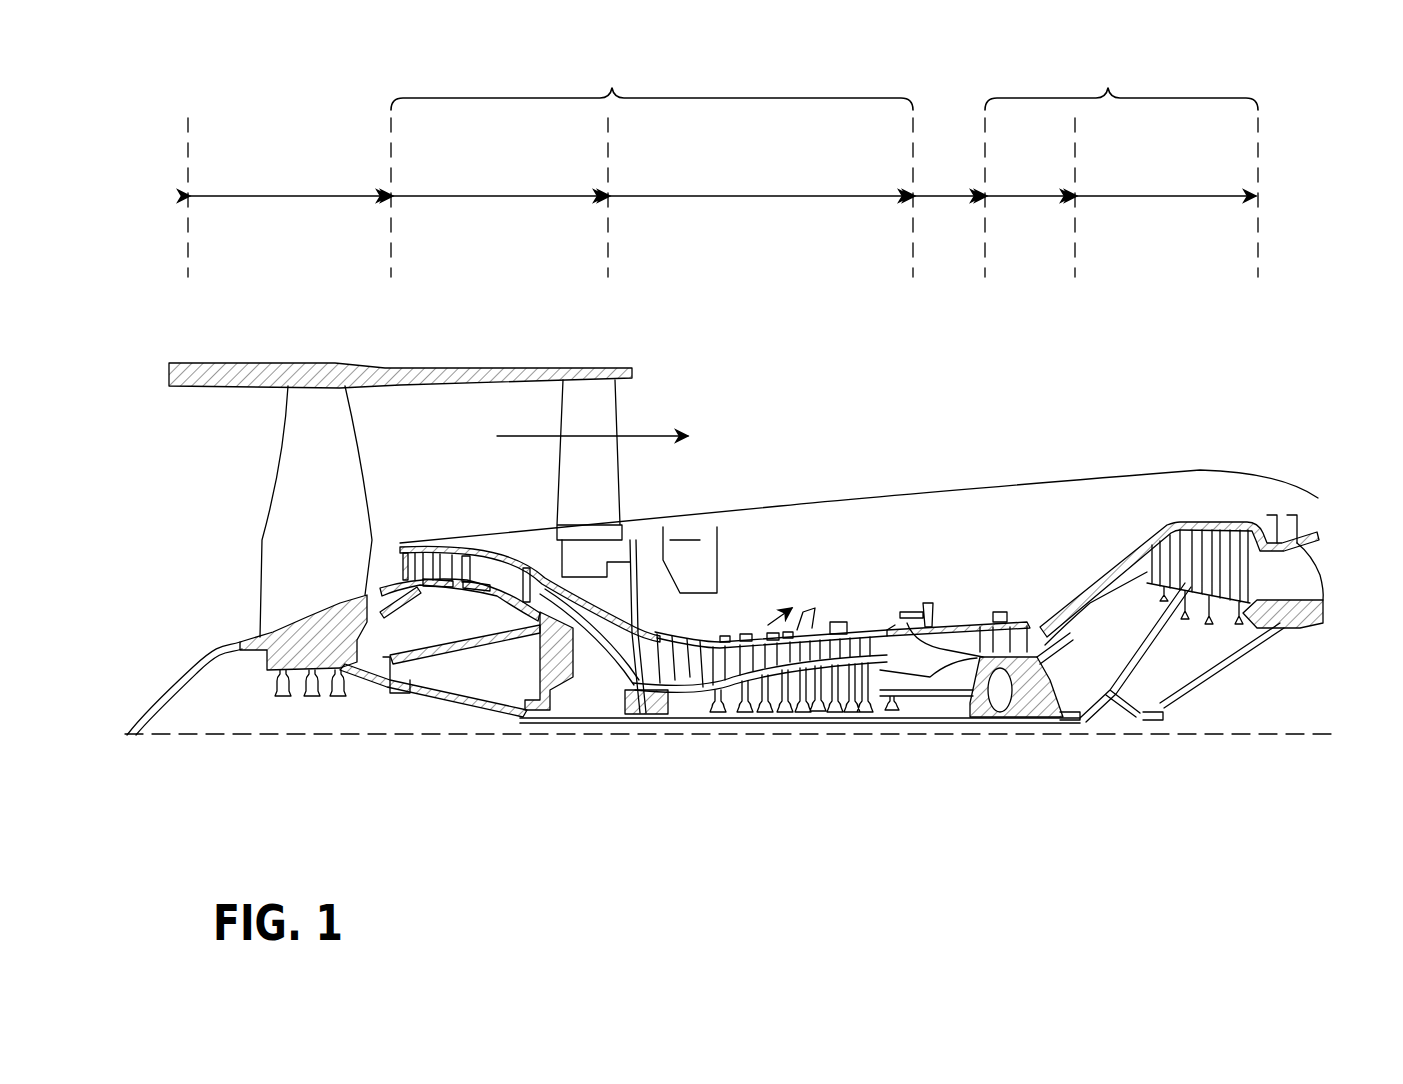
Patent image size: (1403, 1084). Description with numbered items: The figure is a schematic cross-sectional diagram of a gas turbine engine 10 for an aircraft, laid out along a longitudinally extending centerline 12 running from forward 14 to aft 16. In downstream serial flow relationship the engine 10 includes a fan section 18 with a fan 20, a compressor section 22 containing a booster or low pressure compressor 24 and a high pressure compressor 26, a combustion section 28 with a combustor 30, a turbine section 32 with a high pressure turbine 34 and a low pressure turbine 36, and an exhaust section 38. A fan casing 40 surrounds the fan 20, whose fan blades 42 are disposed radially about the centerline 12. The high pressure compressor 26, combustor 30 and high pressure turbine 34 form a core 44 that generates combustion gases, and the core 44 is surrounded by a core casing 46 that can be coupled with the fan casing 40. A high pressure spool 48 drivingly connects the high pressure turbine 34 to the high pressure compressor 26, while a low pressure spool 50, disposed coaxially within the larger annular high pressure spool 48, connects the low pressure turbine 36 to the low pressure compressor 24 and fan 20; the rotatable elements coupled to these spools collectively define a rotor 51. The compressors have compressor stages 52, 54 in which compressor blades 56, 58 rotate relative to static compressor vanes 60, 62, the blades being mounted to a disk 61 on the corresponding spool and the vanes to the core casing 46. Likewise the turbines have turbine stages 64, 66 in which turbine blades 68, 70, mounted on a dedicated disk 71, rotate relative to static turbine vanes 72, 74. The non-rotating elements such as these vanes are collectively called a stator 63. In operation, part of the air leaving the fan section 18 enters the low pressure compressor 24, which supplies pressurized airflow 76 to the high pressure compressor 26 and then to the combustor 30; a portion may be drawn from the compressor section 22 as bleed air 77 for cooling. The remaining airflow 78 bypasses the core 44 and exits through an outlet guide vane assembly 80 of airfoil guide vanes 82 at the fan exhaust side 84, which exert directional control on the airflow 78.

The gas turbine engine 10 is at (942, 352).
The centerline 12 is at (288, 738).
The forward 14 is at (134, 498).
The aft 16 is at (1346, 584).
The fan section 18 is at (289, 184).
The fan 20 is at (226, 577).
The compressor section 22 is at (652, 83).
The low pressure compressor 24 is at (499, 184).
The high pressure compressor 26 is at (760, 184).
The combustion section 28 is at (949, 176).
The combustor 30 is at (952, 645).
The turbine section 32 is at (1121, 83).
The high pressure turbine 34 is at (1030, 184).
The low pressure turbine 36 is at (1166, 184).
The exhaust section 38 is at (1330, 545).
The fan casing 40 is at (432, 364).
The fan blades 42 is at (345, 432).
The core 44 is at (893, 533).
The core casing 46 is at (1120, 545).
The HP shaft or spool 48 is at (927, 697).
The LP shaft or spool 50 is at (536, 723).
The rotor 51 is at (797, 738).
The compressor stages 52 is at (455, 488).
The compressor stages 54 is at (778, 605).
The compressor blades 56 is at (430, 546).
The compressor blades 58 is at (690, 625).
The static compressor vanes 60 is at (408, 546).
The disk 61 is at (420, 590).
The static compressor vanes 62 is at (700, 612).
The stator 63 is at (666, 694).
The turbine stages 64 is at (1050, 560).
The turbine stages 66 is at (1243, 418).
The turbine blades 68 is at (1010, 640).
The turbine blades 70 is at (1243, 533).
The disk 71 is at (1000, 680).
The static turbine vanes 72 is at (980, 640).
The static turbine vanes 74 is at (1223, 533).
The pressurized airflow 76 is at (613, 647).
The bleed air 77 is at (768, 622).
The airflow 78 is at (500, 433).
The outlet guide vane assembly 80 is at (640, 486).
The airfoil guide vanes 82 is at (557, 474).
The fan exhaust side 84 is at (660, 392).